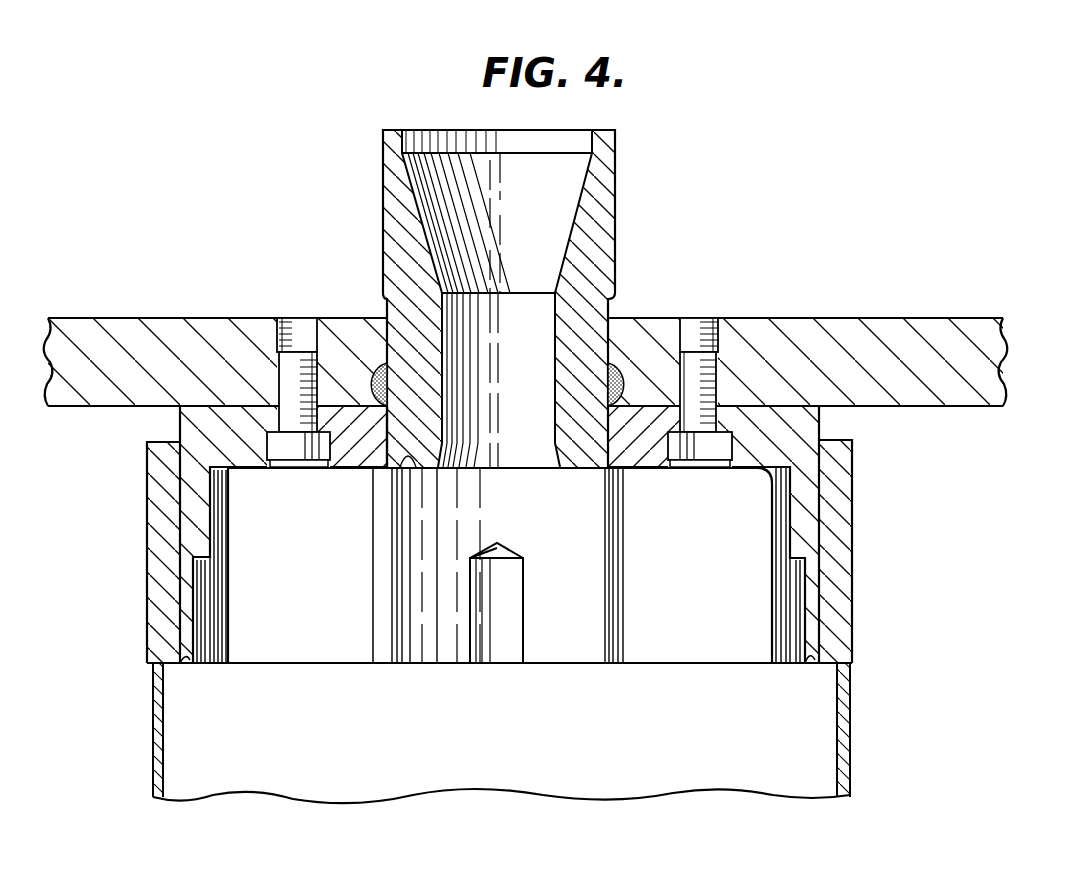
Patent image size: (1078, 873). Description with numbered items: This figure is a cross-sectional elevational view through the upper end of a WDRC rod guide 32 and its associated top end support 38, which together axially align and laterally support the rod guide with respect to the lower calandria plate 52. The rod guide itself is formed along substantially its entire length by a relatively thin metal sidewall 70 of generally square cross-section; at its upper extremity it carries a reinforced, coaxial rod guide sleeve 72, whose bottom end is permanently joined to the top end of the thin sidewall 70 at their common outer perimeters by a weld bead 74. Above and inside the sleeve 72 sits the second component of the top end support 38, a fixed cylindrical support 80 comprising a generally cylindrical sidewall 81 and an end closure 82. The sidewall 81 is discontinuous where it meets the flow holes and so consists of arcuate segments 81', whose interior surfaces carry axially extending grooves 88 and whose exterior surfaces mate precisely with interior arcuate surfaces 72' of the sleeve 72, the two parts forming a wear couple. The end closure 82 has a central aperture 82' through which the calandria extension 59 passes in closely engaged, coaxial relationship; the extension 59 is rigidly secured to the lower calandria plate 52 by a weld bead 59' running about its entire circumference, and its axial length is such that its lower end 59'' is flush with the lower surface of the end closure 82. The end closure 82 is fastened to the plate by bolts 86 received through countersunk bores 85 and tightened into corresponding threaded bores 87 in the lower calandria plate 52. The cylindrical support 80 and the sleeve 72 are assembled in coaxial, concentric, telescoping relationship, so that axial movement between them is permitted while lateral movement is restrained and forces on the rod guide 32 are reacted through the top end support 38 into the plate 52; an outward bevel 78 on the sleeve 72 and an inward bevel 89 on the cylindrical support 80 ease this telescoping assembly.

The WDRC rod guide 32 is at (970, 738).
The top end support 38 is at (92, 445).
The lower calandria plate 52 is at (990, 376).
The calandria extension 59 is at (529, 298).
The weld bead 59' is at (497, 387).
The lower end of calandria extension 59'' is at (490, 486).
The thin metal sidewall 70 is at (852, 762).
The rod guide sleeve 72 is at (136, 552).
The interior arcuate surfaces 72' is at (869, 551).
The weld bead 74 is at (852, 672).
The outward bevel 78 is at (178, 442).
The fixed cylindrical support 80 is at (832, 421).
The cylindrical sidewall 81 is at (240, 566).
The arcuate segments 81' is at (753, 565).
The end closure 82 is at (500, 565).
The central aperture 82' is at (507, 565).
The countersunk bores 85 is at (267, 448).
The bolts 86 is at (317, 470).
The threaded bores 87 is at (298, 332).
The axially extending grooves 88 is at (205, 665).
The inward bevel 89 is at (185, 665).